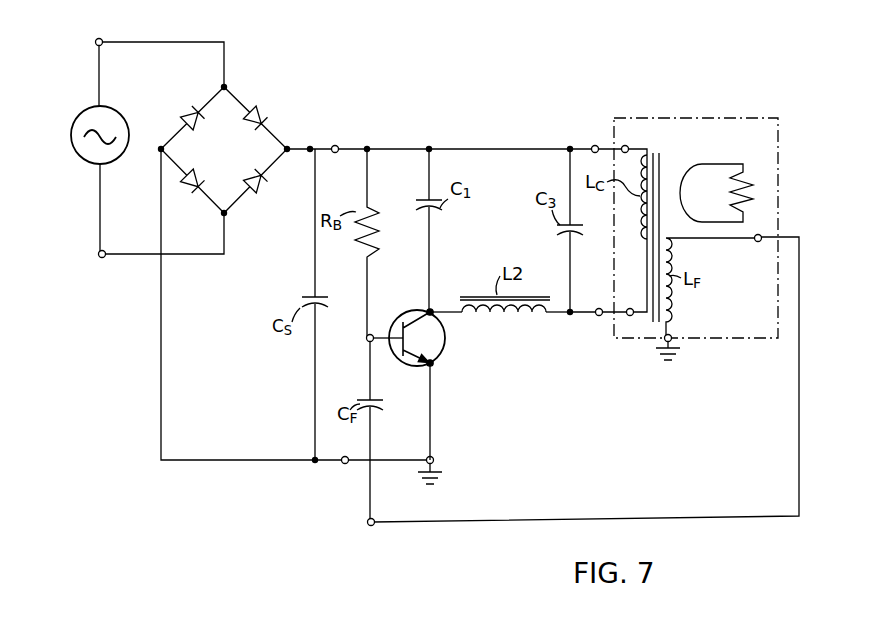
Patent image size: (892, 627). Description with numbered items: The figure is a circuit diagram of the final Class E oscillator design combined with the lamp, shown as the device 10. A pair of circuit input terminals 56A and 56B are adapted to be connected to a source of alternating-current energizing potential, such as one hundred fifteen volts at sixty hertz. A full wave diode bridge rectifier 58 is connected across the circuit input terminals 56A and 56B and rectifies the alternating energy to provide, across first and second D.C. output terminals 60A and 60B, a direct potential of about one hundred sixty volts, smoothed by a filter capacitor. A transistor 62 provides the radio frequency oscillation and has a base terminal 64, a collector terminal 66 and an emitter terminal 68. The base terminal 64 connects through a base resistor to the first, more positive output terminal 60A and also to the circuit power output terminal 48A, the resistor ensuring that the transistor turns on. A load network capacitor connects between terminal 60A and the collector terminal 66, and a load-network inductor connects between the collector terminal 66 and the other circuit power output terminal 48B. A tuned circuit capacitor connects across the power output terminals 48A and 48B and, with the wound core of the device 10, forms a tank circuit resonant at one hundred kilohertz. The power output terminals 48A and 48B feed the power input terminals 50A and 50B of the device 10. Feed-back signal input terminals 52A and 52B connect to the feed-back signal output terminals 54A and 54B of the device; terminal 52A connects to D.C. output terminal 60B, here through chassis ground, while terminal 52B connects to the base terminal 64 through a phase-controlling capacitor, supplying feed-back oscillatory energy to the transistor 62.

The device 10 is at (696, 228).
The circuit power output terminal 48A is at (594, 145).
The circuit power output terminal 48B is at (599, 316).
The power input terminal 50A is at (625, 145).
The power input terminal 50B is at (630, 316).
The feed-back signal input terminal 52A is at (435, 459).
The feed-back signal input terminal 52B is at (374, 526).
The feed-back signal output terminal 54A is at (672, 341).
The feed-back signal output terminal 54B is at (756, 241).
The circuit input terminal 56A is at (99, 42).
The circuit input terminal 56B is at (101, 258).
The rectifier means 58 is at (236, 97).
The first D.C. output terminal 60A is at (337, 145).
The second D.C. output terminal 60B is at (344, 464).
The transistor means 62 is at (443, 336).
The base terminal 64 is at (368, 336).
The collector terminal 66 is at (429, 308).
The emitter terminal 68 is at (434, 366).